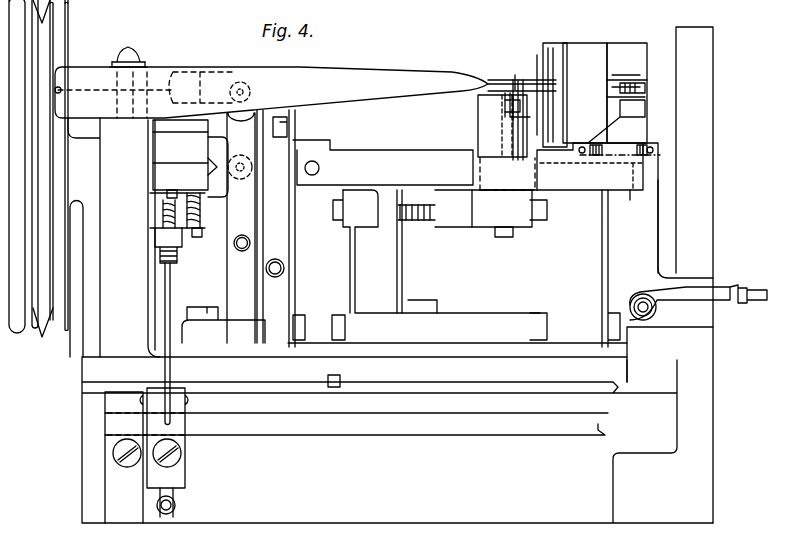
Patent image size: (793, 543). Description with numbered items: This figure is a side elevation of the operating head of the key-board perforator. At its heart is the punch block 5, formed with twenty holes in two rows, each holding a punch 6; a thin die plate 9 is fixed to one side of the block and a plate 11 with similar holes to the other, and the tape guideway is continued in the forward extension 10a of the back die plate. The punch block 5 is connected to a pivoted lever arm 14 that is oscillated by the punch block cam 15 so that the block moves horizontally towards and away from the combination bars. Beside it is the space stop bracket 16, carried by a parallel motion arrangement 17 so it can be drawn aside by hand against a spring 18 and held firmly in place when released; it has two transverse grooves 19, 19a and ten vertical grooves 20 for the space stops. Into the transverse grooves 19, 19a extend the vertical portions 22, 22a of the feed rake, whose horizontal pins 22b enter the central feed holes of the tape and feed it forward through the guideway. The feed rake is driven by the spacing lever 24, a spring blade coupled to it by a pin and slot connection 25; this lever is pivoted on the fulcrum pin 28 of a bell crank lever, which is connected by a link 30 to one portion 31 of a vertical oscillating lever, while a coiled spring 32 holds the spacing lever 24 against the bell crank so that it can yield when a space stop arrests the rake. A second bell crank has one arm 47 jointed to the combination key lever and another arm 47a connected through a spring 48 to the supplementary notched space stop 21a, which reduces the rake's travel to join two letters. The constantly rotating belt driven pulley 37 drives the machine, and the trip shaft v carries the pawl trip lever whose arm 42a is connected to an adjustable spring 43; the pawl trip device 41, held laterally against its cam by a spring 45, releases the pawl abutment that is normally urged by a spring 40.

The belt driven pulley 37 is at (62, 22).
The coiled spring 32 is at (125, 80).
The fulcrum pin 28 is at (130, 60).
The link 30 is at (172, 88).
The spacing lever 24 is at (305, 92).
The pin and slot connection 25 is at (518, 80).
The die plate 9 is at (545, 58).
The forward extension of back plate 10a is at (553, 55).
The punch block 5 is at (588, 50).
The plate 11 is at (637, 50).
The vertical portion of feed rake 22a is at (505, 107).
The vertical portion of feed rake 22 is at (505, 118).
The space stop bracket 16 is at (485, 136).
The horizontal pins 22b is at (612, 80).
The punch 6 is at (608, 98).
The spring 48 is at (617, 147).
The transverse groove 19 is at (507, 141).
The transverse groove 19a is at (522, 180).
The supplementary notched space stop 21a is at (570, 208).
The punch block cam 15 is at (365, 228).
The portion of vertical oscillating lever 31 is at (241, 228).
The pivoted lever arm 14 is at (276, 248).
The spring 40 is at (206, 210).
The spring 45 is at (177, 252).
The pawl trip device 41 is at (162, 308).
The parallel motion arrangement 17 is at (350, 265).
The spring 18 is at (422, 225).
The vertical grooves 20 is at (493, 228).
The arm of bell crank lever 47a is at (673, 229).
The arm of bell crank lever 47 is at (727, 288).
The arm of pawl trip lever 42a is at (183, 478).
The adjustable spring 43 is at (178, 505).
The trip shaft v is at (248, 432).